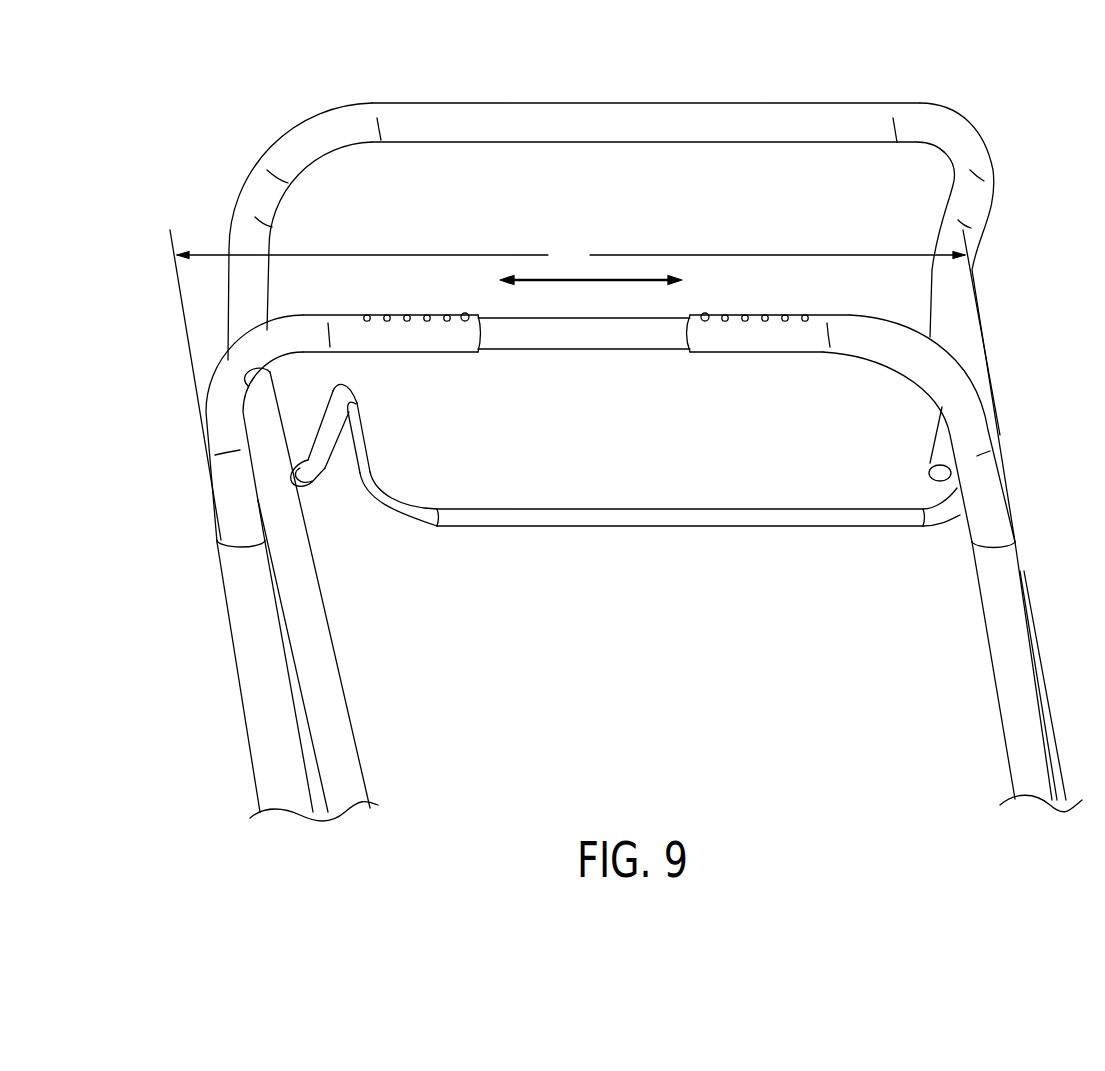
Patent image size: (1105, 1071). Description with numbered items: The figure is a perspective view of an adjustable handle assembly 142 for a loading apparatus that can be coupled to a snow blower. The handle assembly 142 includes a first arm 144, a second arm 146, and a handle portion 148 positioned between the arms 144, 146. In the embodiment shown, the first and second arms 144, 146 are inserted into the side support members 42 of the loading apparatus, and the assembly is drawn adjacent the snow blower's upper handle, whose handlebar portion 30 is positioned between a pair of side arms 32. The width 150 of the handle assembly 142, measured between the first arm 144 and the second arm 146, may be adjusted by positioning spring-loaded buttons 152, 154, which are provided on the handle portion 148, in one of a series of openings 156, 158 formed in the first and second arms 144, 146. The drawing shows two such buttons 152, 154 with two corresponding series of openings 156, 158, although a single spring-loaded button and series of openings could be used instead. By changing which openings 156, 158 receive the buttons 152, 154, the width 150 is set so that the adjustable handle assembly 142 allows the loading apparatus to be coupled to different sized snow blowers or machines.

The handlebar portion 30 is at (641, 103).
The side arms 32 is at (333, 646).
The side support members 42 is at (243, 698).
The adjustable handle assembly 142 is at (140, 357).
The first arm 144 is at (212, 492).
The second arm 146 is at (1009, 510).
The handle portion 148 is at (583, 353).
The width 150 is at (571, 264).
The spring-loaded button 152 is at (465, 312).
The spring-loaded button 154 is at (705, 312).
The openings 156 is at (427, 295).
The openings 158 is at (745, 295).